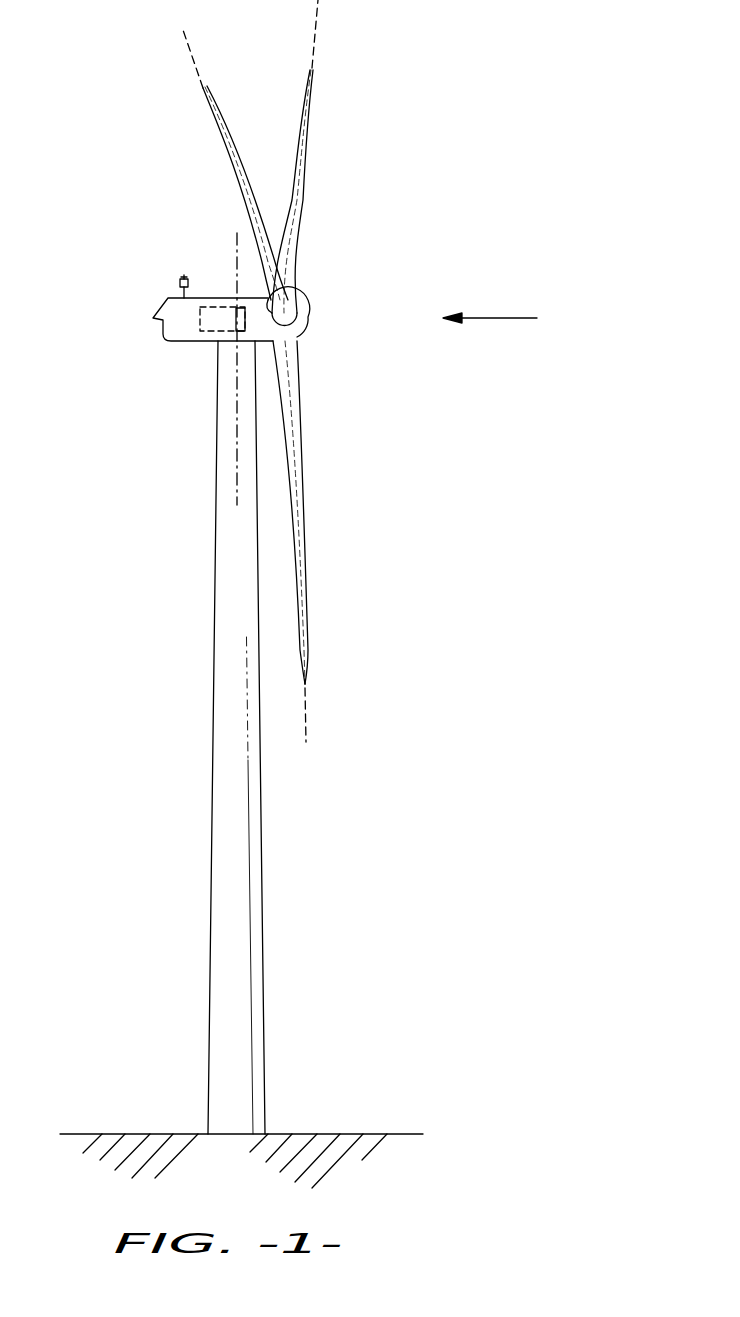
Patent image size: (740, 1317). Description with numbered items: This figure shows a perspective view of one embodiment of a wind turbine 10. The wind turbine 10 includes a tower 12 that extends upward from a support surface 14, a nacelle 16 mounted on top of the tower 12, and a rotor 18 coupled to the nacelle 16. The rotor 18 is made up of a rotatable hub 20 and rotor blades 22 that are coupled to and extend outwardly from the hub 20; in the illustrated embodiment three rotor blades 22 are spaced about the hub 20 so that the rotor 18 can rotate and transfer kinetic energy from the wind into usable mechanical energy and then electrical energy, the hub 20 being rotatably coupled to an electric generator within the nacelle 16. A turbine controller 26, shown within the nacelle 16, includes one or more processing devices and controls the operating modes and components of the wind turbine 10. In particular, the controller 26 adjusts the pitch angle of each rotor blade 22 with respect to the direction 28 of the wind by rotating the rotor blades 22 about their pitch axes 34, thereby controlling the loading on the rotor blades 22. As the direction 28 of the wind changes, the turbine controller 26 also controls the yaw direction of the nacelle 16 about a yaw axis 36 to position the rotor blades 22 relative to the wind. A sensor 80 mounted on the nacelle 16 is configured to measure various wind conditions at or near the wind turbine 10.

The wind turbine 10 is at (316, 594).
The tower 12 is at (223, 847).
The support surface 14 is at (140, 1134).
The nacelle 16 is at (193, 345).
The rotor 18 is at (314, 294).
The rotatable hub 20 is at (304, 328).
The rotor blade 22 is at (243, 176).
The turbine controller 26 is at (225, 308).
The direction of the wind 28 is at (498, 318).
The pitch axis 34 is at (193, 62).
The yaw axis 36 is at (237, 428).
The sensor 80 is at (180, 281).